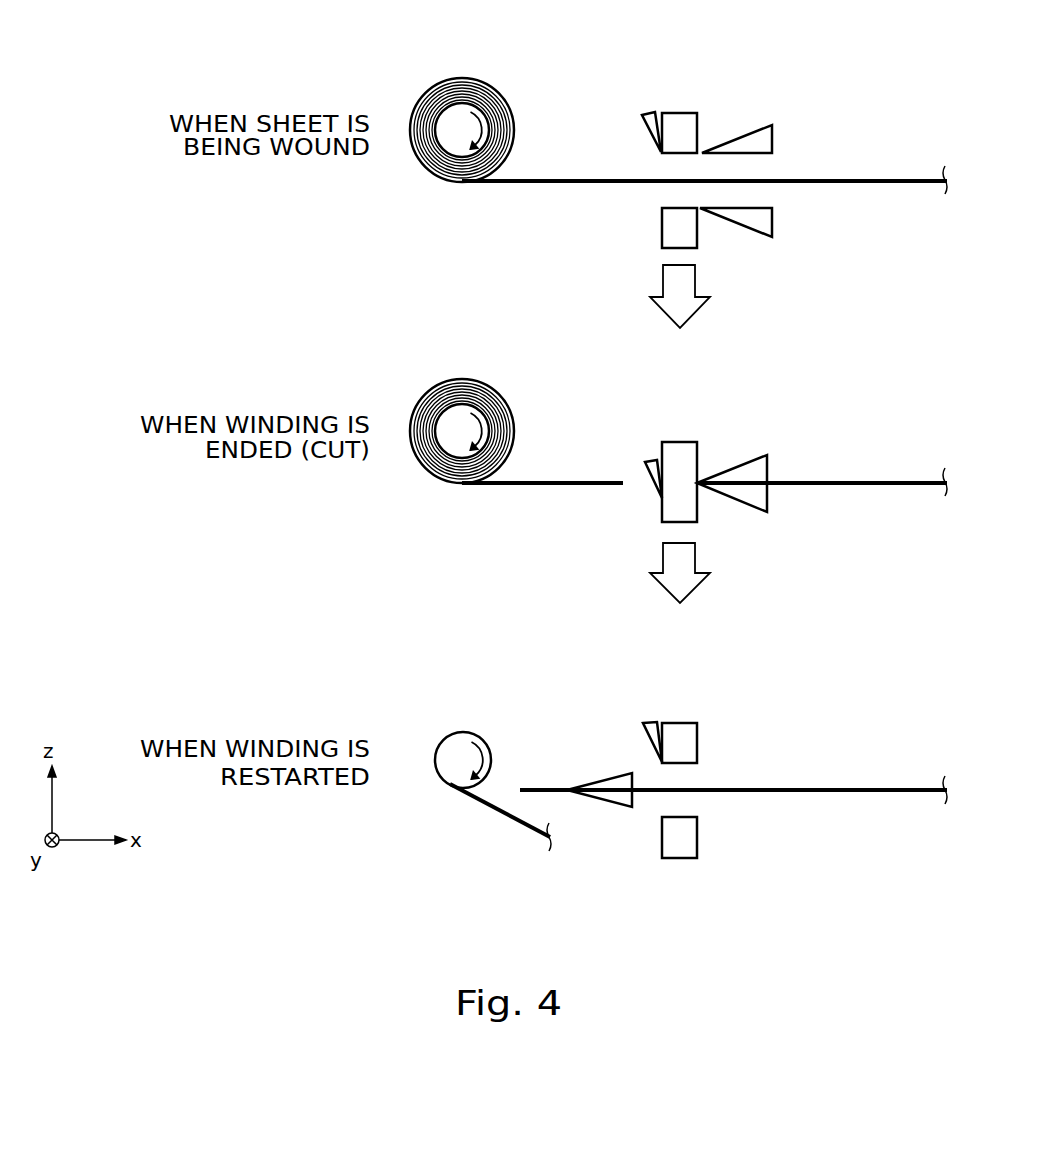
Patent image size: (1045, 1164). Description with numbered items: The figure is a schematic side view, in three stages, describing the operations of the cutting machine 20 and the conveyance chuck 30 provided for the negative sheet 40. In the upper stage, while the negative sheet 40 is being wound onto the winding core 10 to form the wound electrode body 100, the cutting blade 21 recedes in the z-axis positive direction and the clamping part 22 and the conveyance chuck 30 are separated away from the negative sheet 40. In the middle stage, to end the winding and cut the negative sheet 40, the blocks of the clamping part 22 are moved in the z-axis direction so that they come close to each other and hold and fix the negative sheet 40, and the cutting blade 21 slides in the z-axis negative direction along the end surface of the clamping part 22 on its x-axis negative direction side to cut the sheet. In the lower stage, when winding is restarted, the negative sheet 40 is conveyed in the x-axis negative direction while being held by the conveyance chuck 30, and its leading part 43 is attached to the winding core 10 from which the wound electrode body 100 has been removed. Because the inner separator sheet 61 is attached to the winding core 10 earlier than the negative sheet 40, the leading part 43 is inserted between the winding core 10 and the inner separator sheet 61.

The winding core 10 is at (452, 743).
The wound electrode body 100 is at (508, 404).
The cutting machine 20 is at (657, 430).
The cutting blade 21 is at (650, 722).
The clamping part 22 is at (680, 723).
The conveyance chuck 30 is at (620, 777).
The negative sheet 40 is at (928, 787).
The leading part 43 is at (565, 784).
The inner separator sheet 61 is at (492, 812).